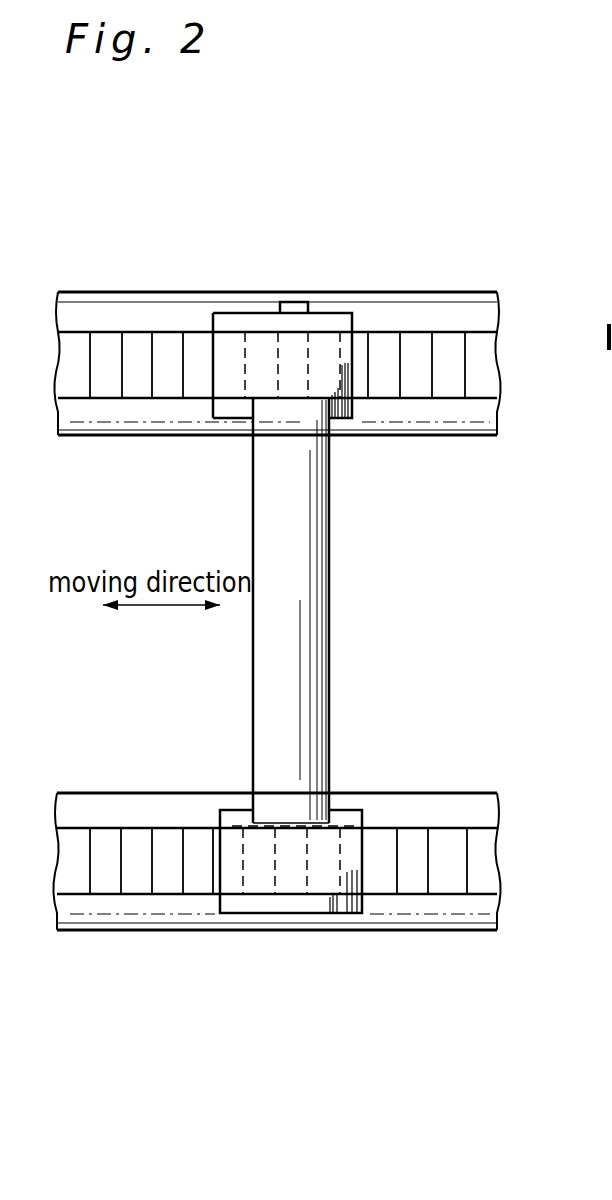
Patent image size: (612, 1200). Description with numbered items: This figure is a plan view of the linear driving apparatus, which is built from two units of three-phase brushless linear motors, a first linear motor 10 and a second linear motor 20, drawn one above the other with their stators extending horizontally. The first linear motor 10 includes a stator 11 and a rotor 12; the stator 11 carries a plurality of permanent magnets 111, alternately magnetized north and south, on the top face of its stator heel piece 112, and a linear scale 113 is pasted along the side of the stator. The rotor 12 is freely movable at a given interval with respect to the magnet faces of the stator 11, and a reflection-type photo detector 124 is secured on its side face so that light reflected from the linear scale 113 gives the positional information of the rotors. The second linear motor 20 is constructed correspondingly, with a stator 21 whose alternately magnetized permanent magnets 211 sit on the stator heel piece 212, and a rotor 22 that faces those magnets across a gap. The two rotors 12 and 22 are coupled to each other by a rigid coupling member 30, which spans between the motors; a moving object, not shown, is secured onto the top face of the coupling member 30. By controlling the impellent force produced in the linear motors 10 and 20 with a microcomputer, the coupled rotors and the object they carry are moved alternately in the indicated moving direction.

The linear motor 10 is at (367, 319).
The stator 11 is at (450, 337).
The permanent magnets 111 is at (480, 383).
The stator heel piece 112 is at (115, 412).
The linear scale 113 is at (128, 292).
The photo detector 124 is at (258, 302).
The rotor 12 is at (340, 407).
The coupling member 30 is at (330, 585).
The linear motor 20 is at (352, 796).
The stator 21 is at (470, 808).
The permanent magnets 211 is at (470, 925).
The stator heel piece 212 is at (113, 810).
The rotor 22 is at (337, 908).